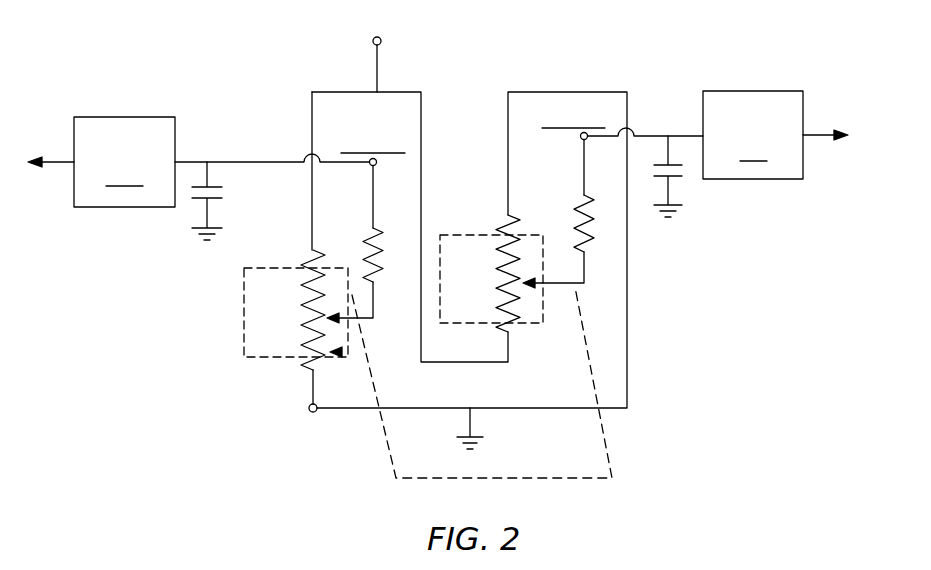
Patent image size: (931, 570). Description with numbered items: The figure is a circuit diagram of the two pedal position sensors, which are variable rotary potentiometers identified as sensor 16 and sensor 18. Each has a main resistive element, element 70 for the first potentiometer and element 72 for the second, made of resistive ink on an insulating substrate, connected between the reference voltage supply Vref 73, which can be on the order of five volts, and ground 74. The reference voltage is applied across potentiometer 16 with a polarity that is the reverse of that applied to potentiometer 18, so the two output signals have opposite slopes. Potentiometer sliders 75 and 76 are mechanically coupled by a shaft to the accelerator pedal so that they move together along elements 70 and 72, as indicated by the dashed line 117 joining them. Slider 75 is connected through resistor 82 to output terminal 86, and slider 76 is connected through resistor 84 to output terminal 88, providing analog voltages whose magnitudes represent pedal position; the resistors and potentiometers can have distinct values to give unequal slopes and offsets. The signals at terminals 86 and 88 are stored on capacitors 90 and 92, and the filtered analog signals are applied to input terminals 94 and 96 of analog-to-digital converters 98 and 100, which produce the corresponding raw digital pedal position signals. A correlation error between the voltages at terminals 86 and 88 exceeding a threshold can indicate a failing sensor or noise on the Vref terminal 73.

The variable rotary potentiometer P1 16 is at (458, 252).
The variable rotary potentiometer P2 18 is at (243, 346).
The main resistive element 70 is at (512, 338).
The main resistive element 72 is at (340, 352).
The reference voltage supply Vref 73 is at (378, 60).
The ground 74 is at (475, 413).
The potentiometer slider 75 is at (527, 281).
The potentiometer slider 76 is at (331, 317).
The resistor 82 is at (588, 253).
The resistor 84 is at (392, 285).
The output terminal 86 is at (580, 138).
The output terminal 88 is at (376, 165).
The capacitor 90 is at (681, 178).
The capacitor 92 is at (222, 193).
The input terminal 94 is at (698, 135).
The input terminal 96 is at (182, 160).
The analog-to-digital converter 98 is at (775, 135).
The analog-to-digital converter 100 is at (101, 162).
The dashed line 117 is at (612, 465).